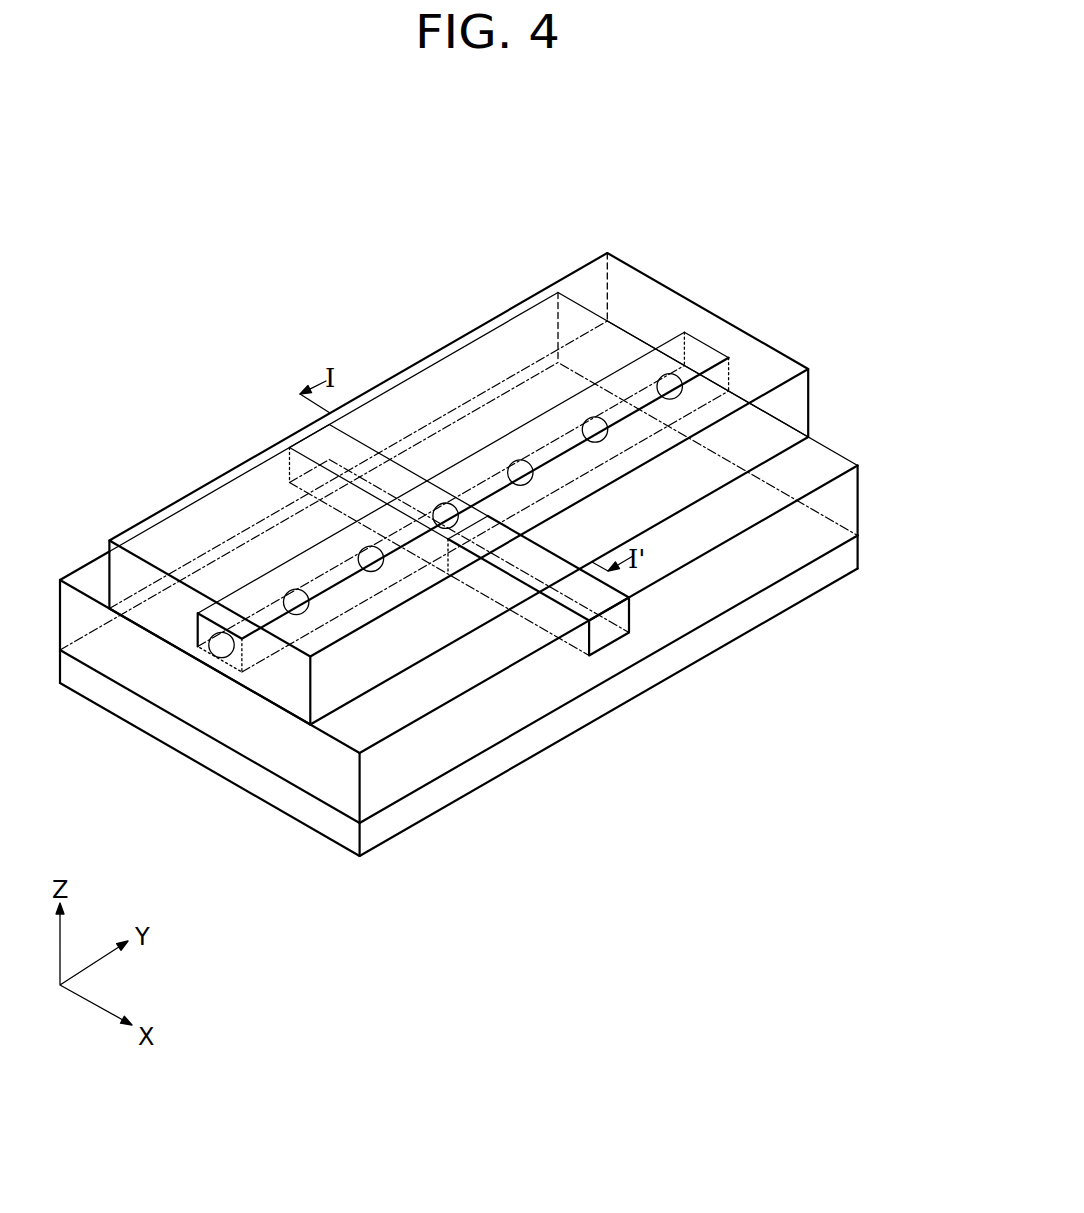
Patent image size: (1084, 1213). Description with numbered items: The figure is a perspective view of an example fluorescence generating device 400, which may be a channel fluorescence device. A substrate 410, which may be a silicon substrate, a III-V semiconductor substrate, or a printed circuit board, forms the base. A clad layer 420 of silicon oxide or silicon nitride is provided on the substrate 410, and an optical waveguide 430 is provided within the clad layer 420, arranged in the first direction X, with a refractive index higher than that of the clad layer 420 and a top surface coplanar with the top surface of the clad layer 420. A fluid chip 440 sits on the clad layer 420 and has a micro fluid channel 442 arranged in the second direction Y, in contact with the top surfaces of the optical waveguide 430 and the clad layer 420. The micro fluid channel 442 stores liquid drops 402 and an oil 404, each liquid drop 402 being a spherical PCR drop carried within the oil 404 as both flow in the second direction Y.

The fluorescence generating device 400 is at (768, 262).
The liquid drops 402 is at (218, 648).
The oil 404 is at (235, 660).
The substrate 410 is at (848, 552).
The clad layer 420 is at (848, 497).
The optical waveguide 430 is at (605, 630).
The fluid chip 440 is at (793, 408).
The micro fluid channel 442 is at (200, 631).